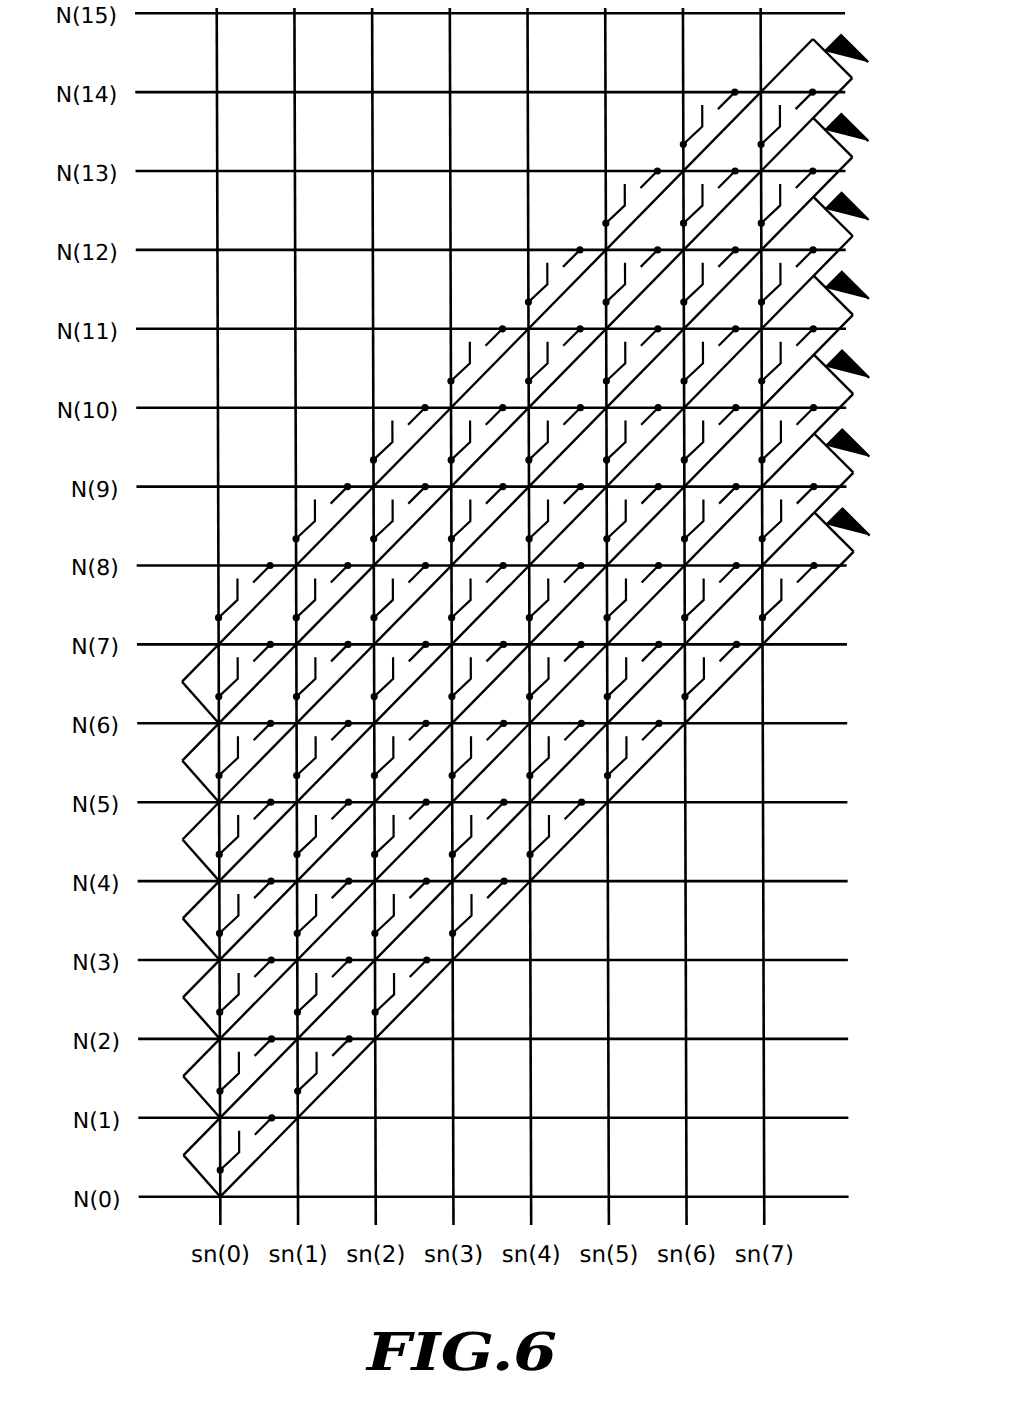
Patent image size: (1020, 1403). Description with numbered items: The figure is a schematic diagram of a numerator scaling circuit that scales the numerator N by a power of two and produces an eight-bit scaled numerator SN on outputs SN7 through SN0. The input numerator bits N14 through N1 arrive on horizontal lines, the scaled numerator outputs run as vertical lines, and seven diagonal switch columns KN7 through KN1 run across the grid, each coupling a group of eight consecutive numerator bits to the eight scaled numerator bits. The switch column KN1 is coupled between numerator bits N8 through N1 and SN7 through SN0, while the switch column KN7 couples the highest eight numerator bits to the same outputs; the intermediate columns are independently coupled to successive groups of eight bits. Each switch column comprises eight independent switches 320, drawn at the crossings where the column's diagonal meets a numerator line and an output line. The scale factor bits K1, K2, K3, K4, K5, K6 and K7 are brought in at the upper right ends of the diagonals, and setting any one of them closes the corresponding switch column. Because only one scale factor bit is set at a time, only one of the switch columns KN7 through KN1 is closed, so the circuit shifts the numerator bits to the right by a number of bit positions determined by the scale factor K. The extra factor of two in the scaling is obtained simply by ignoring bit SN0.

The independent switch 320 is at (492, 405).
The switch column KN1 is at (425, 985).
The switch column KN7 is at (255, 603).
The scale factor bit K1 is at (853, 514).
The scale factor bit K2 is at (853, 436).
The scale factor bit K3 is at (853, 357).
The scale factor bit K4 is at (853, 278).
The scale factor bit K5 is at (853, 199).
The scale factor bit K6 is at (852, 120).
The scale factor bit K7 is at (848, 41).